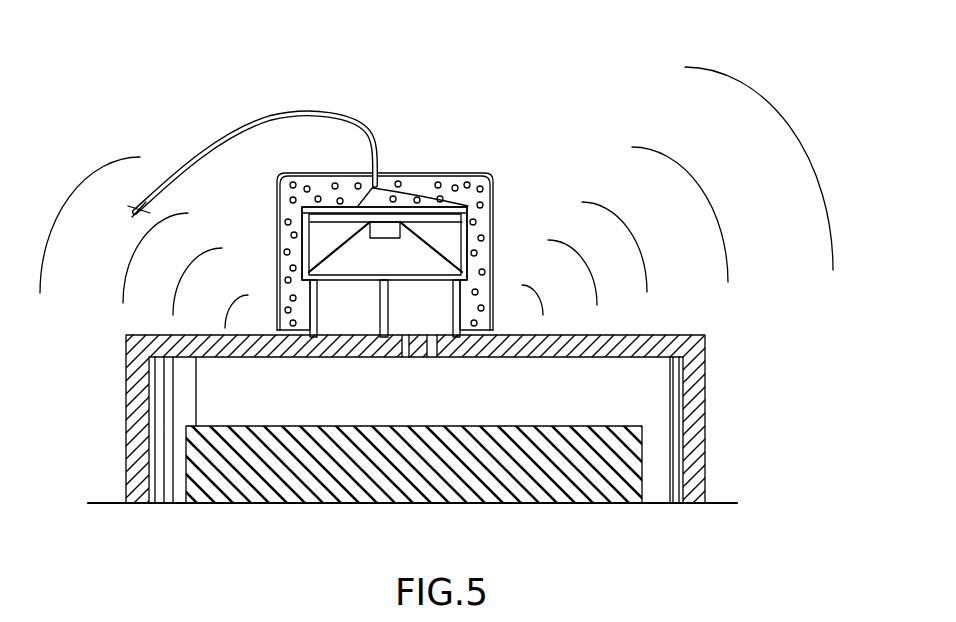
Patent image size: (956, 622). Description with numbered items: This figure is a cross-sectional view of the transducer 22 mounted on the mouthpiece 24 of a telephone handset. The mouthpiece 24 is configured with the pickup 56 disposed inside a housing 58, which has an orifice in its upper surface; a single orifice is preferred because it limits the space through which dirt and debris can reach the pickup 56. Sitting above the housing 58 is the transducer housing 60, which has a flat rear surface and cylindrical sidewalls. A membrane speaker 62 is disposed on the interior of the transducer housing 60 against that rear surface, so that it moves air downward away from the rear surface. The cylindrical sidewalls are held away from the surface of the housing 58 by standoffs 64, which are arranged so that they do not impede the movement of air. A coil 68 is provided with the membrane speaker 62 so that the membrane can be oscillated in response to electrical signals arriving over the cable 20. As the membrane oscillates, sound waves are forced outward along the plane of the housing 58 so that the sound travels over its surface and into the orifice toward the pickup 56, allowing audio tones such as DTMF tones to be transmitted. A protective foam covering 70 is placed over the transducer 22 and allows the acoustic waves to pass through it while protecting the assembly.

The cable 20 is at (280, 110).
The transducer 22 is at (457, 92).
The mouthpiece 24 is at (769, 427).
The pickup 56 is at (643, 440).
The housing 58 is at (690, 336).
The transducer housing 60 is at (332, 205).
The membrane speaker 62 is at (348, 250).
The standoffs 64 is at (318, 304).
The coil 68 is at (434, 224).
The protective foam covering 70 is at (428, 188).